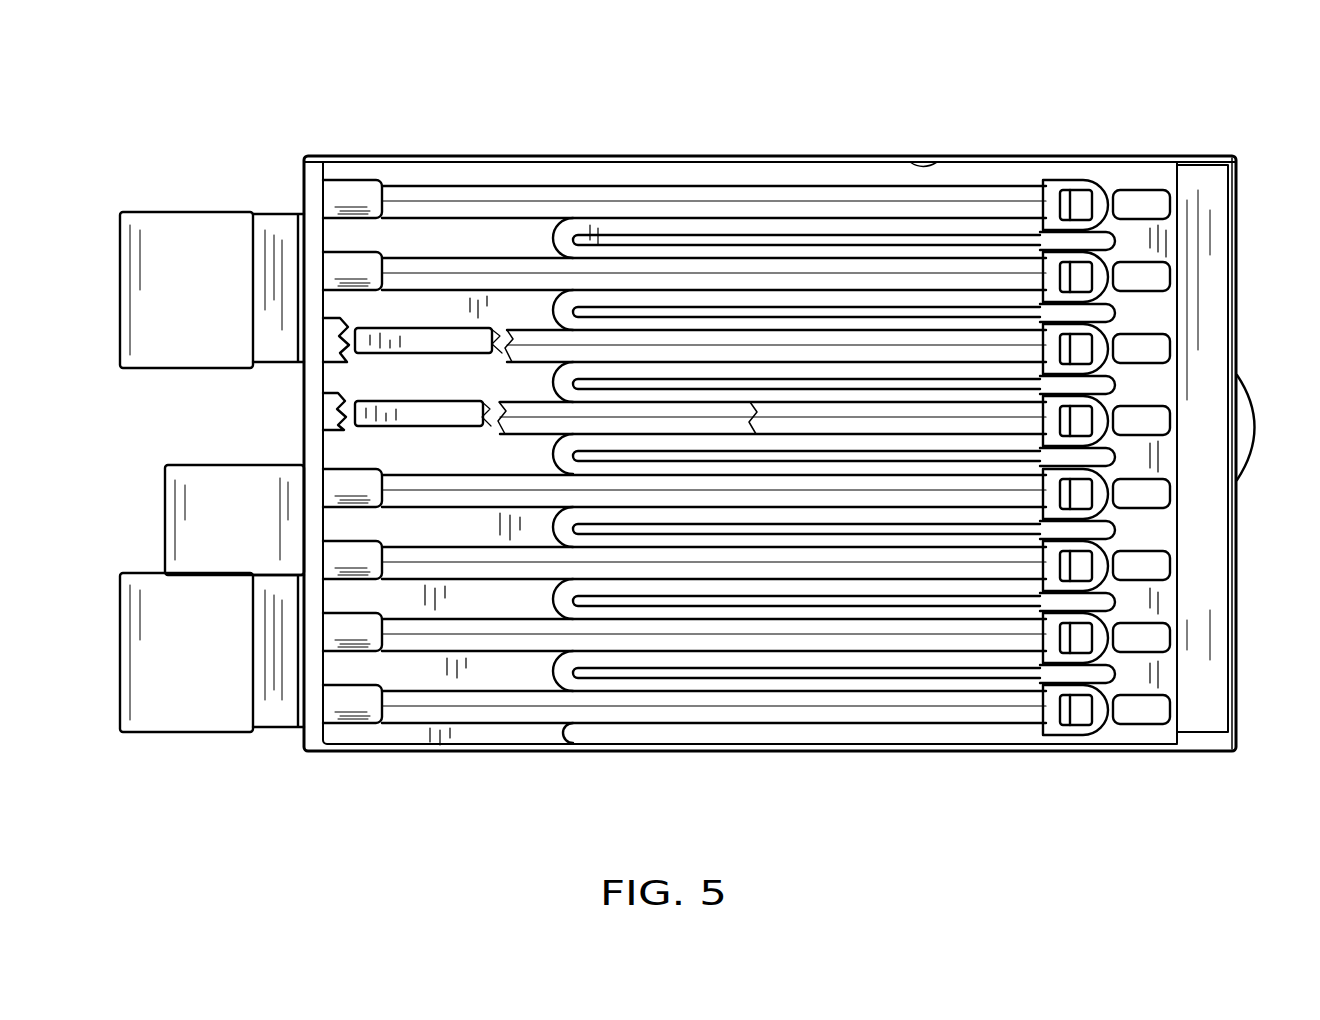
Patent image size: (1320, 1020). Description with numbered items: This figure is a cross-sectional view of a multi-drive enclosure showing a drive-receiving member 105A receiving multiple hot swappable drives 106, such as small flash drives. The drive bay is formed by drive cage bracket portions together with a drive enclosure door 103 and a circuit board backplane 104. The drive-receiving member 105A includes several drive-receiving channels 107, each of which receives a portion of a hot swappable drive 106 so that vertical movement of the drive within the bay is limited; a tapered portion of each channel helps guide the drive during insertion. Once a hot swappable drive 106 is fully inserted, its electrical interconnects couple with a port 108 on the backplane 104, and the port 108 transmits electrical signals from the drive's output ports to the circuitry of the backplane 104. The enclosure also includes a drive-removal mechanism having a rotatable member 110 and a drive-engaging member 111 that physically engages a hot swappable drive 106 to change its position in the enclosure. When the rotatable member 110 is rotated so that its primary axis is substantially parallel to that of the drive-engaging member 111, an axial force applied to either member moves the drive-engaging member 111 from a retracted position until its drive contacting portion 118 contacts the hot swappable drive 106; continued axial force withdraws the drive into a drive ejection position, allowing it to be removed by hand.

The drive enclosure door 103 is at (1215, 195).
The circuit board backplane 104 is at (297, 728).
The drive-receiving member 105A is at (890, 173).
The hot swappable drive 106 is at (507, 195).
The drive-receiving channel 107 is at (663, 417).
The port 108 is at (345, 268).
The rotatable member 110 is at (1075, 660).
The drive-engaging member 111 is at (353, 313).
The drive contacting portion 118 is at (420, 414).